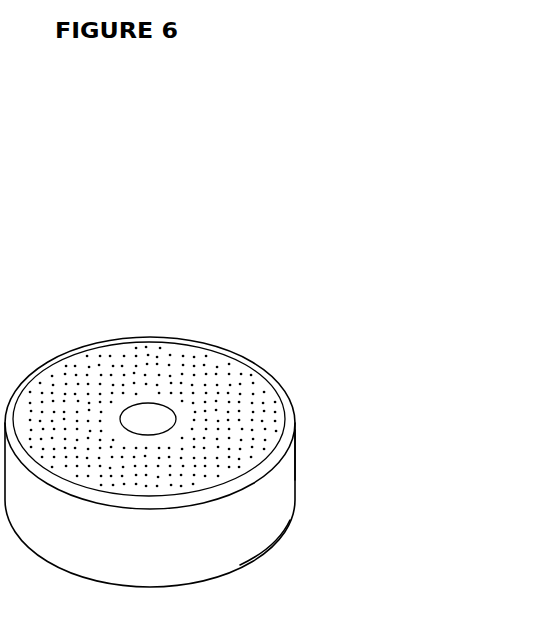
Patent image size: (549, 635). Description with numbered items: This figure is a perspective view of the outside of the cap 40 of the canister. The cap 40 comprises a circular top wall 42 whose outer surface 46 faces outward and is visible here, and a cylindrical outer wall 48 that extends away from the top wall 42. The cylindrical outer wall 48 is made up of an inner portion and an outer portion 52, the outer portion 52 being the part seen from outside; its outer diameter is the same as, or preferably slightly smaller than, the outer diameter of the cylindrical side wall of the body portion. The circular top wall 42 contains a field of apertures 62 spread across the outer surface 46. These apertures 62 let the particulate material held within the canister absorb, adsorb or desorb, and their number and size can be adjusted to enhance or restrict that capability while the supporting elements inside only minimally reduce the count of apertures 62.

The cap 40 is at (369, 433).
The circular top wall 42 is at (255, 389).
The outer surface 46 is at (168, 357).
The cylindrical outer wall 48 is at (277, 489).
The outer portion 52 is at (283, 522).
The apertures 62 is at (217, 363).